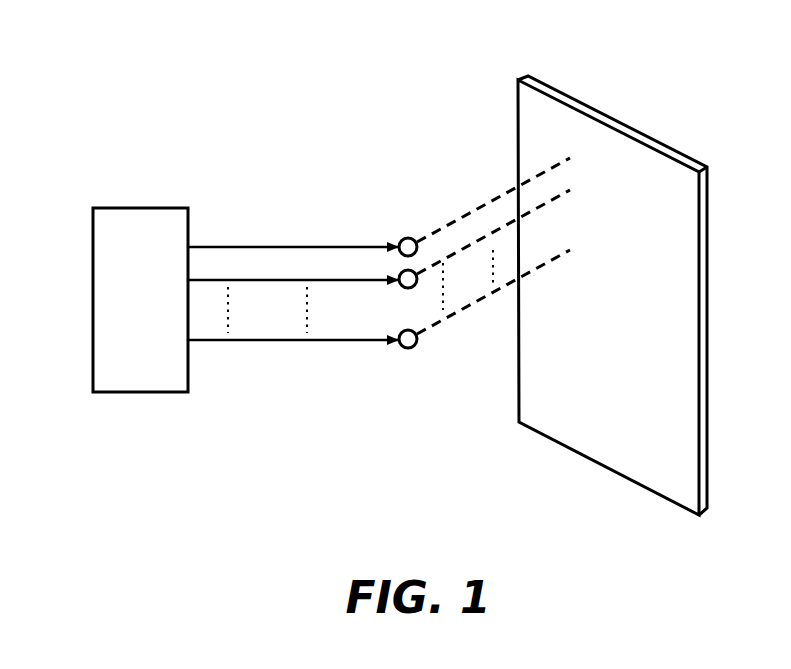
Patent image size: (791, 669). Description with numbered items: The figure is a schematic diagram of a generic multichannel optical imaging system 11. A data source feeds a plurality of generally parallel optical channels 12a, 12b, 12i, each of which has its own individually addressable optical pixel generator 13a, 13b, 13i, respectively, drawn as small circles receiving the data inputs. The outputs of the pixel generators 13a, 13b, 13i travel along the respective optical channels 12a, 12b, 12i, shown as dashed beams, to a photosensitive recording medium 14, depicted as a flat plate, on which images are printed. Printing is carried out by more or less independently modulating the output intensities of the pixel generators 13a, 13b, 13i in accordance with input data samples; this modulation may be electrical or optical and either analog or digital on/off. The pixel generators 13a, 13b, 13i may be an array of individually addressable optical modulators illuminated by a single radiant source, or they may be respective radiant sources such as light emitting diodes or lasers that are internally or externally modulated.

The optical imaging system 11 is at (313, 115).
The optical channel 12a is at (495, 200).
The optical channel 12b is at (457, 255).
The optical channel 12i is at (485, 330).
The optical pixel generator 13a is at (405, 238).
The optical pixel generator 13b is at (400, 285).
The optical pixel generator 13i is at (413, 348).
The photosensitive recording medium 14 is at (620, 170).